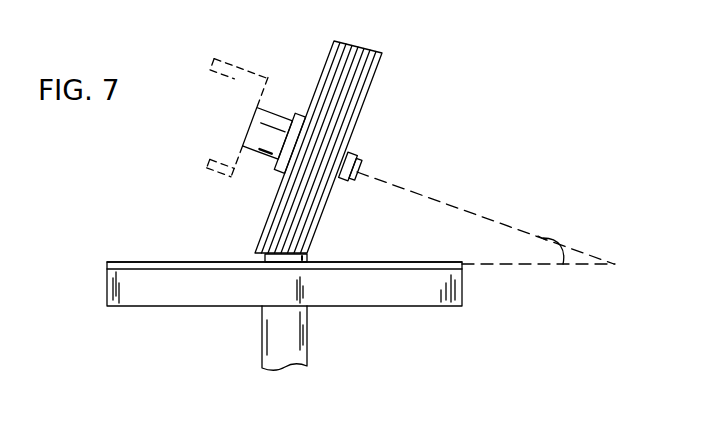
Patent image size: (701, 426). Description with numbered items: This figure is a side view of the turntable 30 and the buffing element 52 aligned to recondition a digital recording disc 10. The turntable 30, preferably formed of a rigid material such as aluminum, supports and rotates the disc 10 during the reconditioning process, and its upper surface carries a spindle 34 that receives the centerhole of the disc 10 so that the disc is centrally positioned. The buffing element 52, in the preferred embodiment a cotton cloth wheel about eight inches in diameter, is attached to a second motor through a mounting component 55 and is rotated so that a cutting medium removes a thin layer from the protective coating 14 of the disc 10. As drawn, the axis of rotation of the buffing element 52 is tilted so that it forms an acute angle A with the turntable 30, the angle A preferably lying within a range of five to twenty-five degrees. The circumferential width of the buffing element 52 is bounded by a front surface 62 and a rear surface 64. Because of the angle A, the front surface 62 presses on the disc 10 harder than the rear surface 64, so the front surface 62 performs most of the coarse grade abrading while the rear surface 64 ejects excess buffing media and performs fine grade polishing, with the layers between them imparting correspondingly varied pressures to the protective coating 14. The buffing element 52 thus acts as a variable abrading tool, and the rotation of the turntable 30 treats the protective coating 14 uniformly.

The disc 10 is at (107, 264).
The protective coating 14 is at (146, 262).
The turntable 30 is at (107, 291).
The spindle 34 is at (265, 253).
The buffing element 52 is at (366, 46).
The mounting component 55 is at (267, 120).
The front surface 62 is at (327, 201).
The rear surface 64 is at (278, 186).
The acute angle A is at (563, 264).